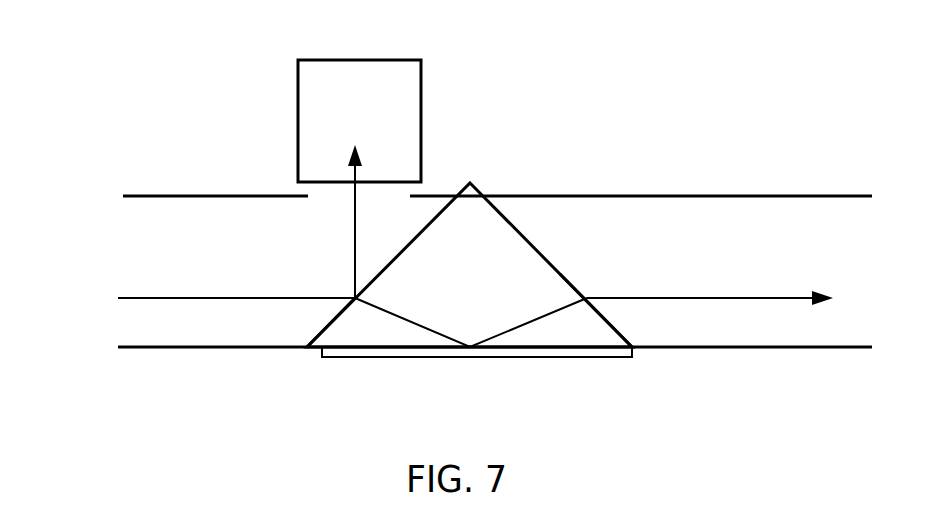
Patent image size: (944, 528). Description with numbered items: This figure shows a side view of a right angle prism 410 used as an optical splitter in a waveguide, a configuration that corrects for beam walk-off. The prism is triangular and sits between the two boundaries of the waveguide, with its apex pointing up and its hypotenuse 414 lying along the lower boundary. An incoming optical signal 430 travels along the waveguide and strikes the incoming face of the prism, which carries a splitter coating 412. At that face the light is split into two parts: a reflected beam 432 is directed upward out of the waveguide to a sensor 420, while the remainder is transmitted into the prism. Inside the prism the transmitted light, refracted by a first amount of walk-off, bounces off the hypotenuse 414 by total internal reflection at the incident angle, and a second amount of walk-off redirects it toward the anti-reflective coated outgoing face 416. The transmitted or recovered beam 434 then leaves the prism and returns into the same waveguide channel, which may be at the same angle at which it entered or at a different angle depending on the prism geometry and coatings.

The right angle prism 410 is at (343, 332).
The splitter coating 412 is at (392, 260).
The hypotenuse 414 is at (410, 350).
The outgoing face 416 is at (556, 266).
The sensor 420 is at (312, 60).
The input light beam 430 is at (150, 297).
The reflected beam 432 is at (353, 262).
The transmitted beam 434 is at (800, 297).